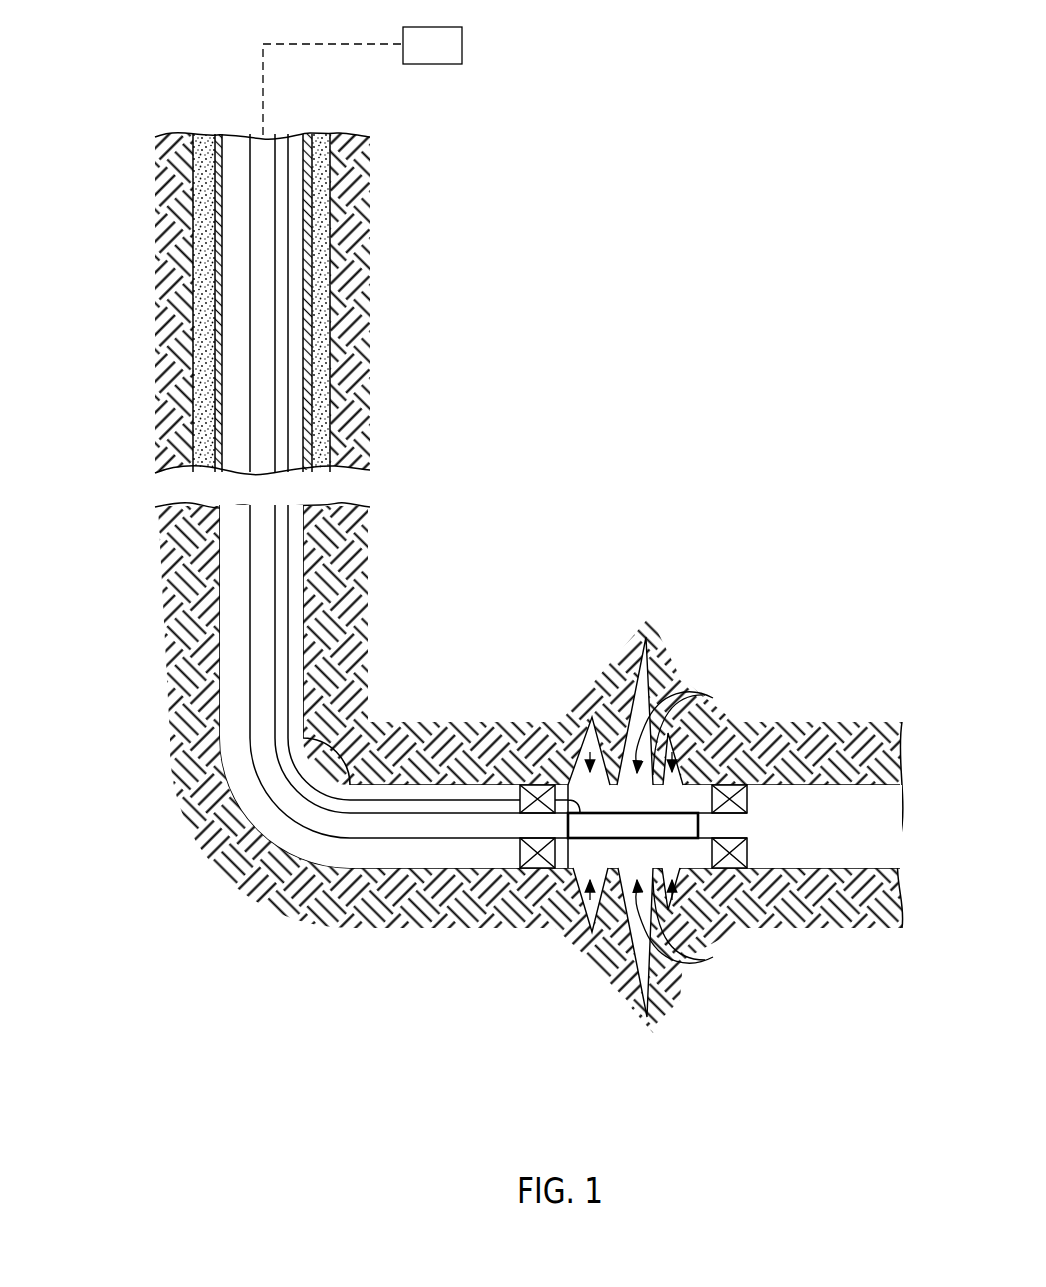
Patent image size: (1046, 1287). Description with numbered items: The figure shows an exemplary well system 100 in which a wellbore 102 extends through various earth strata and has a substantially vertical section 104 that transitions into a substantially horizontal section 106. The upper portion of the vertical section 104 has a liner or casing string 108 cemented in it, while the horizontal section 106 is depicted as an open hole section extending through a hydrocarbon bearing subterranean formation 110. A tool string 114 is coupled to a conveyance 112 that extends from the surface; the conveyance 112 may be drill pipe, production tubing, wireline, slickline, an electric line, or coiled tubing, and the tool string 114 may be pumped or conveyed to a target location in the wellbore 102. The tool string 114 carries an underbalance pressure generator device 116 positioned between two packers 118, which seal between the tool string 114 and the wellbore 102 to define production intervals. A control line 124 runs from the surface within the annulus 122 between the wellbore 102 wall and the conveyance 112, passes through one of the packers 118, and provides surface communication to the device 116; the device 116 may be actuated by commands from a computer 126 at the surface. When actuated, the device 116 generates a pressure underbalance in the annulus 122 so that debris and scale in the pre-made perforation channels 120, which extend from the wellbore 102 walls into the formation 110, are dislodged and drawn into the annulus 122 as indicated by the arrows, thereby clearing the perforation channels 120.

The well system 100 is at (542, 388).
The wellbore 102 is at (217, 572).
The vertical section 104 is at (218, 733).
The horizontal section 106 is at (834, 958).
The casing string 108 is at (332, 342).
The subterranean formation 110 is at (431, 662).
The conveyance 112 is at (275, 583).
The tool string 114 is at (633, 943).
The underbalance pressure generator device 116 is at (577, 828).
The packers 118 is at (629, 888).
The perforation channels 120 is at (614, 678).
The annulus 122 is at (235, 632).
The control line 124 is at (290, 613).
The computer 126 is at (449, 57).